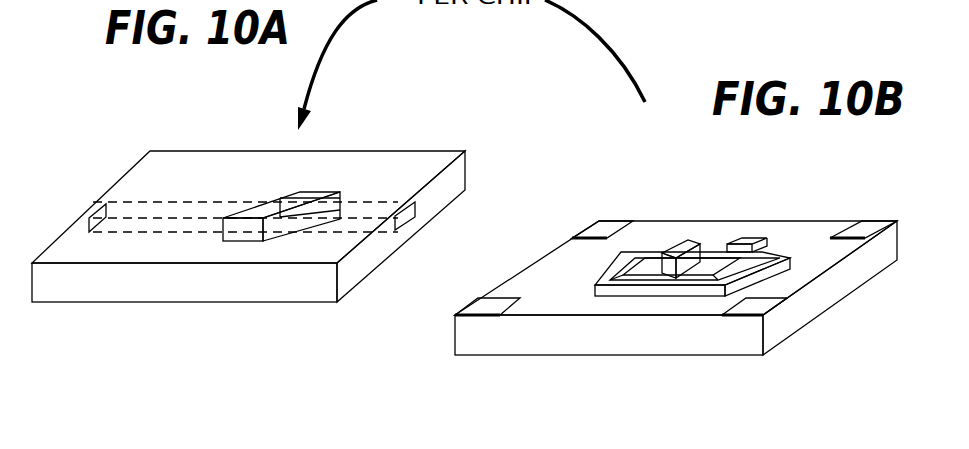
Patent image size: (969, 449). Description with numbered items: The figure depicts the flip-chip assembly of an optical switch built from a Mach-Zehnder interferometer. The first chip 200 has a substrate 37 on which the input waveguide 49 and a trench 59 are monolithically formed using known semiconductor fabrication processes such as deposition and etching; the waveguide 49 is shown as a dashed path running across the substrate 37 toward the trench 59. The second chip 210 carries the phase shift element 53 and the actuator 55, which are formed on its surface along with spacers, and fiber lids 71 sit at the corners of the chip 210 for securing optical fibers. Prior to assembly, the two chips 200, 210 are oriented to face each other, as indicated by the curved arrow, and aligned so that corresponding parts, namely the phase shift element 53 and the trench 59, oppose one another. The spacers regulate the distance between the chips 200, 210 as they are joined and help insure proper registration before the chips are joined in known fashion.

In FIG. 10A, the substrate 37 is at (352, 151).
In FIG. 10A, the first chip 200 is at (79, 205).
In FIG. 10A, the input waveguide 49 is at (160, 209).
In FIG. 10A, the trench 59 is at (292, 194).
In FIG. 10B, the second chip 210 is at (795, 345).
In FIG. 10B, the fiber lid 71 is at (488, 311).
In FIG. 10B, the phase shift element 53 is at (707, 244).
In FIG. 10B, the actuator 55 is at (695, 233).